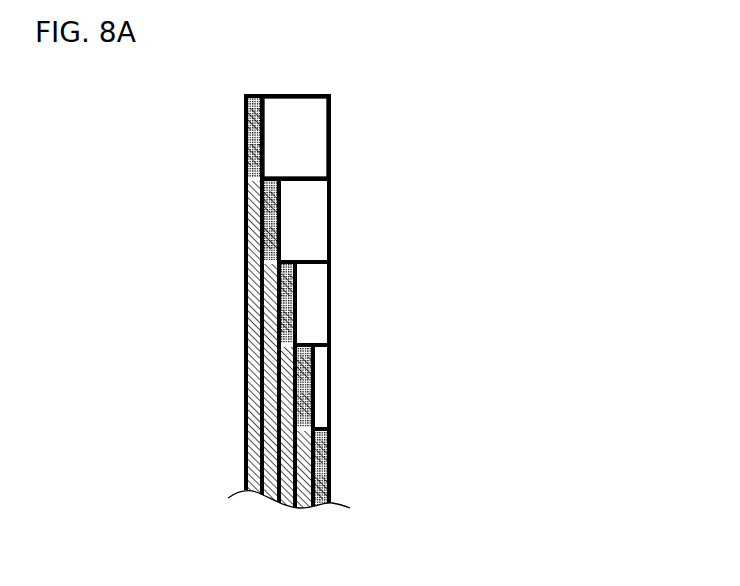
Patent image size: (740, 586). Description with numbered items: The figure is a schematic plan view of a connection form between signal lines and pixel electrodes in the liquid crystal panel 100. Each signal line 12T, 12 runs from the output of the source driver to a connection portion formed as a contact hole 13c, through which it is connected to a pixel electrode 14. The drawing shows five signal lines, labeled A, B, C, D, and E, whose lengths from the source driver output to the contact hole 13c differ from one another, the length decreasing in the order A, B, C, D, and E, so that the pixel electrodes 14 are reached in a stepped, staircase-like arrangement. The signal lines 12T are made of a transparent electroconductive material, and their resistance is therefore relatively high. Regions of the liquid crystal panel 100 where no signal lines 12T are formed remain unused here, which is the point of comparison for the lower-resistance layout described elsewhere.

The liquid crystal panel 100 is at (370, 92).
The pixel electrode 14 is at (325, 139).
The contact hole 13c is at (295, 302).
The signal line 12T is at (245, 323).
The signal line 12 is at (204, 351).